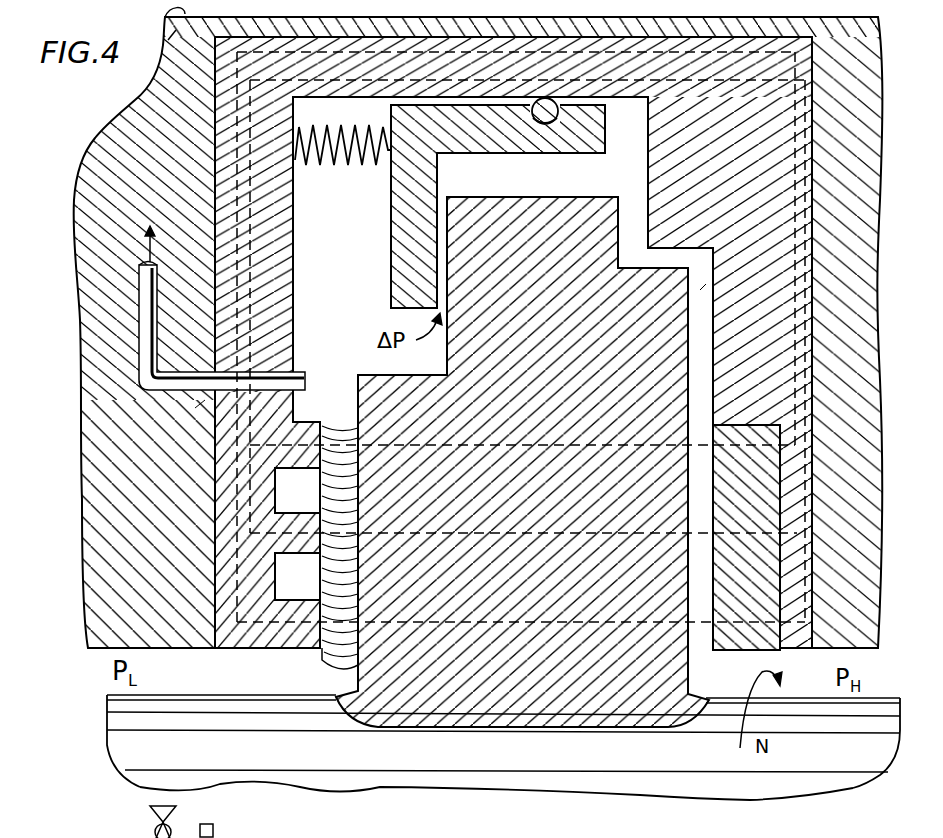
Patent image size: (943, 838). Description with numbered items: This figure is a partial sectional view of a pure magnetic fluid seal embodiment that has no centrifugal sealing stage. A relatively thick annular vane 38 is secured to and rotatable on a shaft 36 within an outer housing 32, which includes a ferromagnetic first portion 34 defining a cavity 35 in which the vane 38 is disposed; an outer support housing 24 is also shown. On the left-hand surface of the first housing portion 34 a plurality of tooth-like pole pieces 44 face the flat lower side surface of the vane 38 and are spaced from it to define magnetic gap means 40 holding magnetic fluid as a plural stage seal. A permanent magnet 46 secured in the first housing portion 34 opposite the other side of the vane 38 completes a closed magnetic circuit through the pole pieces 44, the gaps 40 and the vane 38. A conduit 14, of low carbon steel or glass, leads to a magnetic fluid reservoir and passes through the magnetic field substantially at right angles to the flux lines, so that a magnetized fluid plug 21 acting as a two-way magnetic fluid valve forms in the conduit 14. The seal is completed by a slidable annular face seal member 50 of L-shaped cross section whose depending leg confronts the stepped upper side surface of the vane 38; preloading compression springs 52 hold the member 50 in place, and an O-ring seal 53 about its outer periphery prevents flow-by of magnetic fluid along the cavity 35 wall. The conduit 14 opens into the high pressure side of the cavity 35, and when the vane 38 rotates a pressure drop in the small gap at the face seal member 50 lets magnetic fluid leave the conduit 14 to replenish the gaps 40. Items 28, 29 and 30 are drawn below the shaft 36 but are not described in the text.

The outer housing 32 is at (158, 16).
The outer support housing 24 is at (168, 42).
The ferromagnetic first portion 34 is at (548, 42).
The tooth-like pole pieces 44 is at (283, 470).
The permanent magnet 46 is at (748, 425).
The annular vane 38 is at (560, 197).
The cavity 35 is at (703, 288).
The annular face seal member 50 is at (437, 176).
The O-ring seal 53 is at (540, 128).
The preloading compression springs 52 is at (330, 167).
The conduit 14 is at (300, 372).
The magnetized fluid plug 21 is at (197, 408).
The magnetic gap means 40 is at (336, 430).
The shaft 36 is at (710, 787).
The valve 28 is at (148, 811).
The pump 29 is at (153, 828).
The valve 30 is at (226, 836).